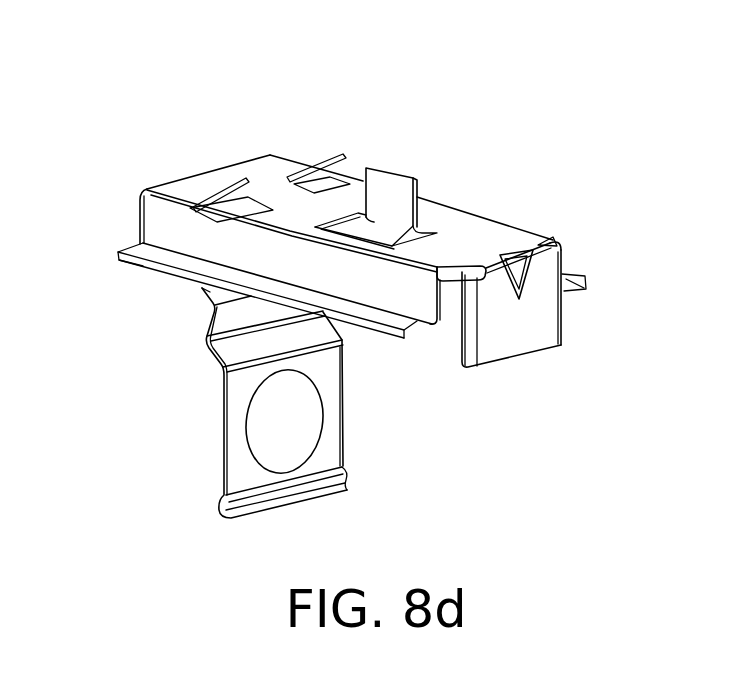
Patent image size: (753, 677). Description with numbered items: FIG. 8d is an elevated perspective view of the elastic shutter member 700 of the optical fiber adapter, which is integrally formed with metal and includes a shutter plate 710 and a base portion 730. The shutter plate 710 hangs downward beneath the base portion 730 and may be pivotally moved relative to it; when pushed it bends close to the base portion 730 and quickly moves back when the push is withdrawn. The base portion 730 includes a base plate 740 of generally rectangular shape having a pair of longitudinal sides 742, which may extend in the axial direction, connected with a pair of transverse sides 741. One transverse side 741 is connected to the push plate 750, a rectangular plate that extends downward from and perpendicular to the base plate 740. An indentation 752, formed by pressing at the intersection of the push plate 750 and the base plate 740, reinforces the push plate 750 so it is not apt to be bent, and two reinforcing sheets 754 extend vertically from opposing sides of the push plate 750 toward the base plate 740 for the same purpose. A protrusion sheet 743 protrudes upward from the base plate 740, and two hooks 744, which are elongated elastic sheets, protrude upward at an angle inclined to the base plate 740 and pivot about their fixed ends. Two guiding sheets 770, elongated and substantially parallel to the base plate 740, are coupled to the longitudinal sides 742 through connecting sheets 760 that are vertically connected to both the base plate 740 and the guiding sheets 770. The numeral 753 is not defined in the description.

The shutter member 700 is at (474, 95).
The shutter plate 710 is at (202, 435).
The base portion 730 is at (427, 160).
The base plate 740 is at (487, 230).
The transverse sides 741 is at (550, 233).
The longitudinal sides 742 is at (160, 197).
The protrusion sheet 743 is at (388, 186).
The hooks 744 is at (329, 162).
The push plate 750 is at (529, 337).
The indentation 752 is at (556, 250).
The side edge 753 is at (565, 337).
The reinforcing sheets 754 is at (466, 337).
The connecting sheets 760 is at (208, 243).
The guiding sheets 770 is at (143, 255).